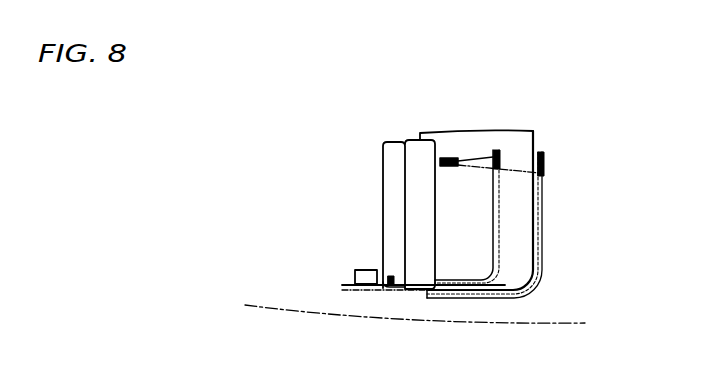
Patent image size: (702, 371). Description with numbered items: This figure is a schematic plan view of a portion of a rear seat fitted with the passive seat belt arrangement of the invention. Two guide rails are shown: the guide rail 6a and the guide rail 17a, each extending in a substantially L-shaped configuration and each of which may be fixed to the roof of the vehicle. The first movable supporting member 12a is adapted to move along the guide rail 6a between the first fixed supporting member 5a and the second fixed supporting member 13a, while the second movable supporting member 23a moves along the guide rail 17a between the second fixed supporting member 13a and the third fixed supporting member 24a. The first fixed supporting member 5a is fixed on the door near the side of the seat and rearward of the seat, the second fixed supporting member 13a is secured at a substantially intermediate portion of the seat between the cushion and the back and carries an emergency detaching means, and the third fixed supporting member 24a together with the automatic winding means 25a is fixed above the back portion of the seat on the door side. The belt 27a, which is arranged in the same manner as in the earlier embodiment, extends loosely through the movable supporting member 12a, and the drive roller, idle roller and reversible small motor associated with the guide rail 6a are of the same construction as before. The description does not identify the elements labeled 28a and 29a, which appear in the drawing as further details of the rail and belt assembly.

The first fixed supporting member 5a is at (427, 298).
The guide rail 6a is at (542, 256).
The first movable supporting member 12a is at (541, 166).
The second fixed supporting member 13a is at (450, 158).
The guide rail 17a is at (500, 218).
The second movable supporting member 23a is at (498, 148).
The third fixed supporting member 24a is at (392, 281).
The automatic winding means 25a is at (355, 274).
The belt 27a is at (479, 162).
The center line 28a is at (505, 167).
The seal lip 29a is at (496, 260).